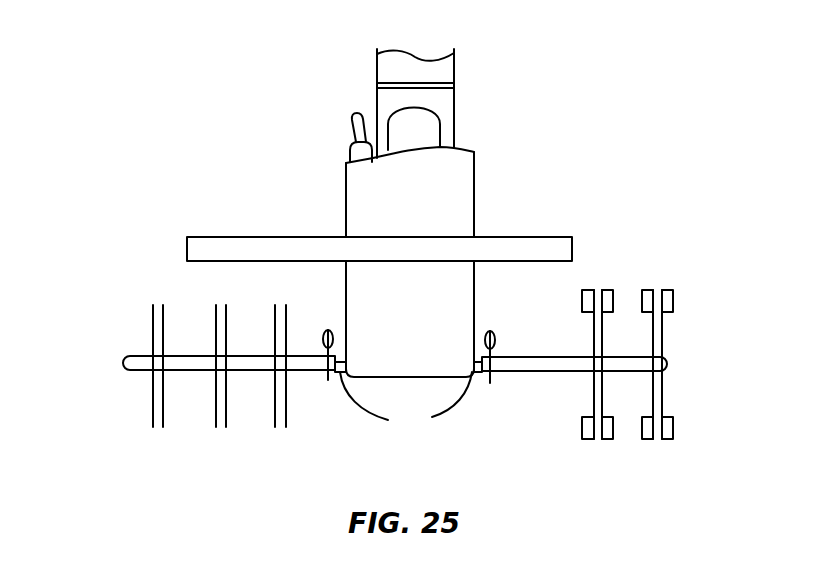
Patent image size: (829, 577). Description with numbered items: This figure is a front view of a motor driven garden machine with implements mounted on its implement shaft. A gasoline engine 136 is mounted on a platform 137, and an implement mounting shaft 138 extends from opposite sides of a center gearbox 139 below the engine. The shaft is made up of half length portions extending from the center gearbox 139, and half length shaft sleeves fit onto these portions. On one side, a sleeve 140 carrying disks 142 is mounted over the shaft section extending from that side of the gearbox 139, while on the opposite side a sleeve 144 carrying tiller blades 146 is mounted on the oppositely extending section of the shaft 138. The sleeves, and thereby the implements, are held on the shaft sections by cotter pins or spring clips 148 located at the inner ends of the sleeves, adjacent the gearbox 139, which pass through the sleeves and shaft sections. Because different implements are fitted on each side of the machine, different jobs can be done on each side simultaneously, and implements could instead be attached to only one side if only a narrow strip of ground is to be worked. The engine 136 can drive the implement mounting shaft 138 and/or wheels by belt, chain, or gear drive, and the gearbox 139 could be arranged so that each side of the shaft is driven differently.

The gasoline engine 136 is at (358, 198).
The platform 137 is at (527, 248).
The implement mounting shaft 138 is at (406, 404).
The center gearbox 139 is at (462, 300).
The sleeve 140 is at (255, 362).
The disks 142 is at (216, 405).
The sleeve 144 is at (542, 363).
The tiller blades 146 is at (615, 291).
The cotter pins or spring clips 148 is at (327, 330).